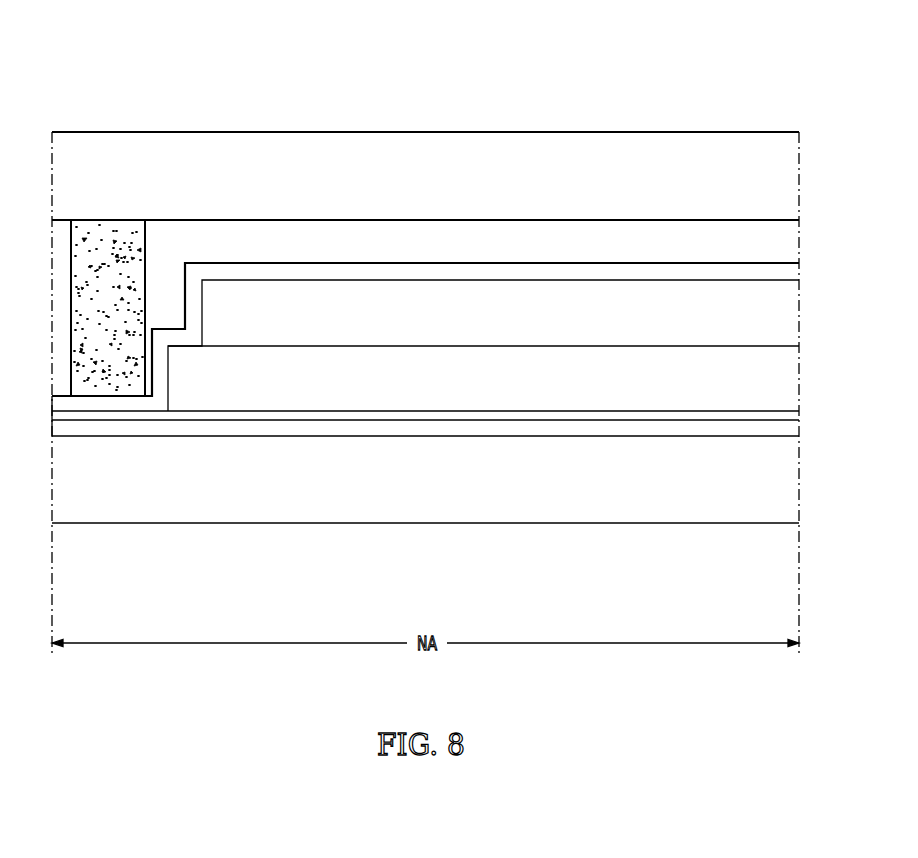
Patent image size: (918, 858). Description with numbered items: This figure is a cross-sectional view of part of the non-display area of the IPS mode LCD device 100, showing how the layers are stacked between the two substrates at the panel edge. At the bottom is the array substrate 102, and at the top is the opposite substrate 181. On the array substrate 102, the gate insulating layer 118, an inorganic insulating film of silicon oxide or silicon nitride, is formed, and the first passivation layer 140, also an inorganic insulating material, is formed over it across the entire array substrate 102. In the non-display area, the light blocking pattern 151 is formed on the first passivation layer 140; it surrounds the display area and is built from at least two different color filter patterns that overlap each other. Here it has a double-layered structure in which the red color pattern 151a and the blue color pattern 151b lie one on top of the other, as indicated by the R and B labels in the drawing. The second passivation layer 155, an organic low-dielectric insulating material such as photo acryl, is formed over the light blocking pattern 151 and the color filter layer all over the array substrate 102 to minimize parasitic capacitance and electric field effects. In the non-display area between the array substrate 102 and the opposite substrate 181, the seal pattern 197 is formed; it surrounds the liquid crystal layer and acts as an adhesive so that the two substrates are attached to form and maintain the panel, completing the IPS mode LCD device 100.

The IPS mode LCD device 100 is at (721, 119).
The opposite substrate 181 is at (780, 181).
The second passivation layer 155 is at (383, 275).
The seal pattern 197 is at (112, 377).
The first passivation layer 140 is at (305, 413).
The gate insulating layer 118 is at (352, 427).
The light blocking pattern 151 is at (568, 465).
The red color pattern 151a is at (522, 390).
The blue color pattern 151b is at (563, 330).
The array substrate 102 is at (780, 495).